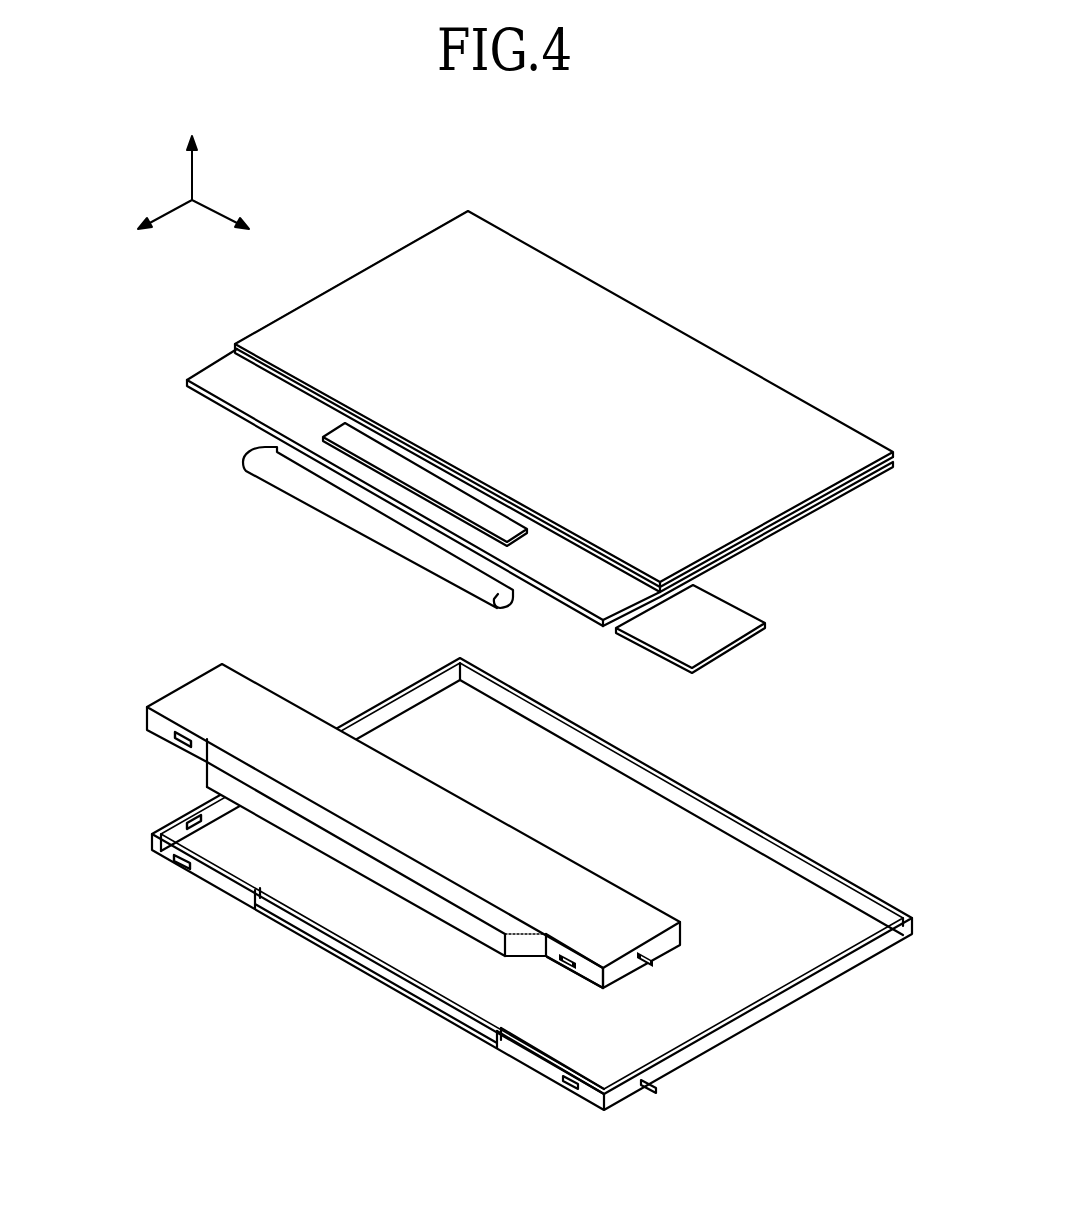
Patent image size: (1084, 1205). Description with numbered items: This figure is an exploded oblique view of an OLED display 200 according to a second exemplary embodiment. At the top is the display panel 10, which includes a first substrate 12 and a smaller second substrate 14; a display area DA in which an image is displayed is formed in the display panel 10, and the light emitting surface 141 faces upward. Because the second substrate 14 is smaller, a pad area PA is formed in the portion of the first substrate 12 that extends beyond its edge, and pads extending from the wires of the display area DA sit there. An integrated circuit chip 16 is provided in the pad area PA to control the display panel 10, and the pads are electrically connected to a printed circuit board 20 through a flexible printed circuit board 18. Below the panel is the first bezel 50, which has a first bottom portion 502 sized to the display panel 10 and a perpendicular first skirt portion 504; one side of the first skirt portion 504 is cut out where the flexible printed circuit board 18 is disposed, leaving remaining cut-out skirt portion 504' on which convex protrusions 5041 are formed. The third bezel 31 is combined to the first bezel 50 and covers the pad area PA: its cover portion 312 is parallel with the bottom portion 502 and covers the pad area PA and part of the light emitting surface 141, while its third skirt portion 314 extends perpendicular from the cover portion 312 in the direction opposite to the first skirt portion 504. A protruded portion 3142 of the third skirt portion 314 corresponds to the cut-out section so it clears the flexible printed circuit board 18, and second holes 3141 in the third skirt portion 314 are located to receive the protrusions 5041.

The OLED display 200 is at (380, 178).
The display panel 10 is at (802, 394).
The first substrate 12 is at (808, 513).
The second substrate 14 is at (852, 480).
The light emitting surface 141 is at (570, 290).
The integrated circuit (IC) chip 16 is at (357, 440).
The flexible printed circuit board (FPC) 18 is at (372, 522).
The printed circuit board (PCB) 20 is at (713, 630).
The third bezel 31 is at (282, 694).
The cover portion 312 is at (200, 697).
The third skirt portion 314 is at (596, 971).
The second holes 3141 is at (560, 957).
The protruded portion 3142 is at (390, 878).
The first bezel 50 is at (718, 762).
The first bottom portion 502 is at (600, 812).
The first skirt portion 504 is at (532, 884).
The cut-out skirt portion 504' is at (539, 1088).
The protrusions 5041 is at (650, 1087).
The display area DA is at (564, 396).
The pad area PA is at (600, 602).